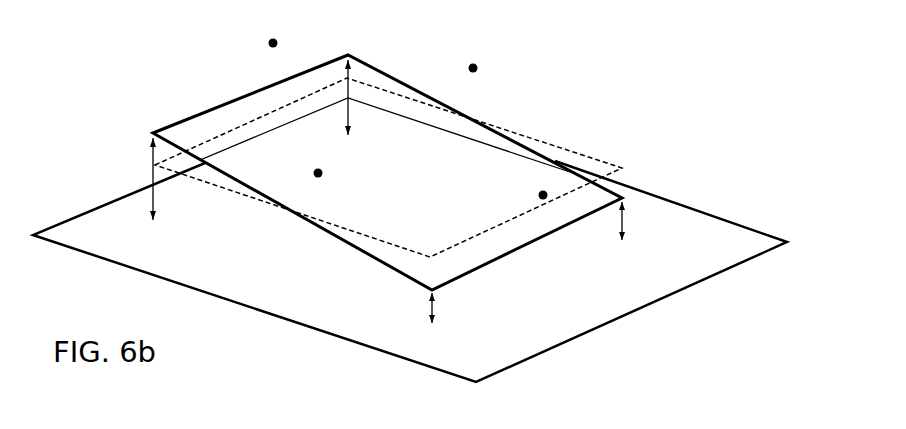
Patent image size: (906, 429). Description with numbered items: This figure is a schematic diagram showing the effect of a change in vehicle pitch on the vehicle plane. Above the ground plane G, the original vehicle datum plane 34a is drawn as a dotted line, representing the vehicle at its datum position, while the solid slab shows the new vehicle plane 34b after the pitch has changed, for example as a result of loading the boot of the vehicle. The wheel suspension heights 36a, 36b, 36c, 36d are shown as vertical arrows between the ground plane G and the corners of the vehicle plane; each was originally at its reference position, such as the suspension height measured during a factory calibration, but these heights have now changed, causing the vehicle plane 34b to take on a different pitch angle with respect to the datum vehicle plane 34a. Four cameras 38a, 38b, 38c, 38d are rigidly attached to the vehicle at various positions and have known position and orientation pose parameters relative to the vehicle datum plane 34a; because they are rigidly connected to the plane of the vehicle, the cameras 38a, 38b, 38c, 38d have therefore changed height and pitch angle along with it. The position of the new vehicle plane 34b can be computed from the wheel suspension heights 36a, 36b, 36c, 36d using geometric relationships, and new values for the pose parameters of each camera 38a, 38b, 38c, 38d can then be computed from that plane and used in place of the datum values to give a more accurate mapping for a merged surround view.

The vehicle datum plane 34a is at (600, 162).
The vehicle plane 34b is at (377, 68).
The wheel suspension height 36a is at (178, 179).
The wheel suspension height 36b is at (457, 307).
The wheel suspension height 36c is at (645, 221).
The wheel suspension height 36d is at (346, 90).
The camera 38a is at (309, 218).
The camera 38b is at (533, 240).
The camera 38c is at (463, 115).
The camera 38d is at (262, 90).
The ground plane G is at (410, 271).